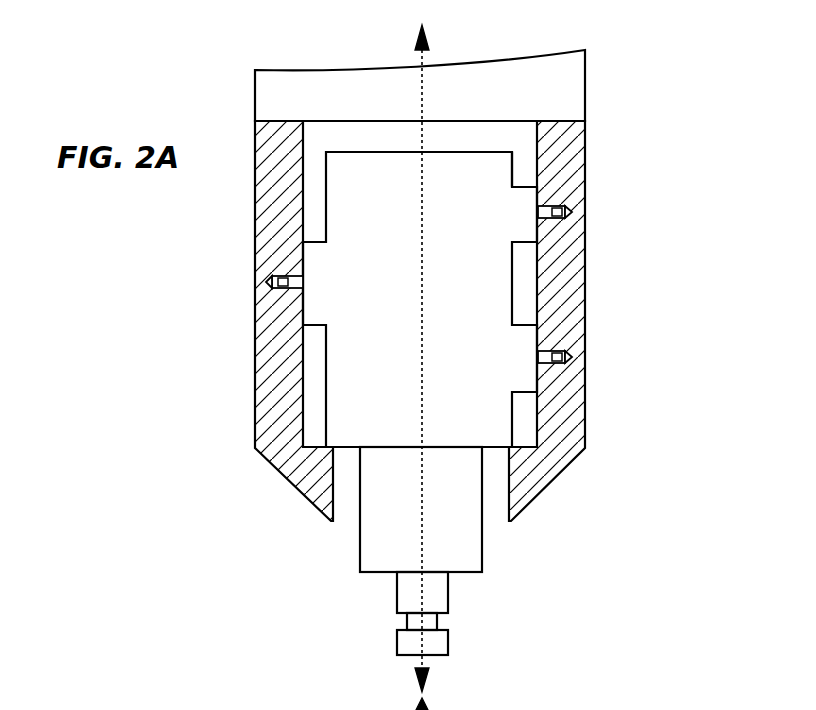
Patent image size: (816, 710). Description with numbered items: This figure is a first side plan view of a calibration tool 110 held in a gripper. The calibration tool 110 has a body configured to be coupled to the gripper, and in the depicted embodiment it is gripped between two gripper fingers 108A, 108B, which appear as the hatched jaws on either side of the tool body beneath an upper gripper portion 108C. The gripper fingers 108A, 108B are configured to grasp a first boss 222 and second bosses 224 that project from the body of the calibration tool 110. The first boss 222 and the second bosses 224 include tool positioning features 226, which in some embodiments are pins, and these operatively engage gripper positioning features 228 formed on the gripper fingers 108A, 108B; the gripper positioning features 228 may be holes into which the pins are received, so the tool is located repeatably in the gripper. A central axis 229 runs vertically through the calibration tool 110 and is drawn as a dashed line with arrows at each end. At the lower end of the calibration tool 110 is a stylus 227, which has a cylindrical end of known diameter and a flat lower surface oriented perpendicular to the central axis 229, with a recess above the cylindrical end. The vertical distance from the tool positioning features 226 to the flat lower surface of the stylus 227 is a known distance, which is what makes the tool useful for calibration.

The gripper finger 108A is at (562, 476).
The gripper finger 108B is at (288, 484).
The top member 108C is at (462, 65).
The calibration tool 110 is at (516, 170).
The first boss 222 is at (303, 320).
The second bosses 224 is at (545, 225).
The tool positioning features 226 is at (300, 296).
The gripper positioning features 228 is at (282, 276).
The central axis 229 is at (422, 543).
The stylus 227 is at (450, 644).